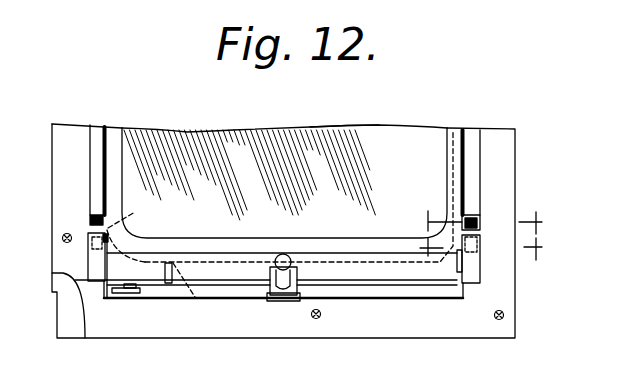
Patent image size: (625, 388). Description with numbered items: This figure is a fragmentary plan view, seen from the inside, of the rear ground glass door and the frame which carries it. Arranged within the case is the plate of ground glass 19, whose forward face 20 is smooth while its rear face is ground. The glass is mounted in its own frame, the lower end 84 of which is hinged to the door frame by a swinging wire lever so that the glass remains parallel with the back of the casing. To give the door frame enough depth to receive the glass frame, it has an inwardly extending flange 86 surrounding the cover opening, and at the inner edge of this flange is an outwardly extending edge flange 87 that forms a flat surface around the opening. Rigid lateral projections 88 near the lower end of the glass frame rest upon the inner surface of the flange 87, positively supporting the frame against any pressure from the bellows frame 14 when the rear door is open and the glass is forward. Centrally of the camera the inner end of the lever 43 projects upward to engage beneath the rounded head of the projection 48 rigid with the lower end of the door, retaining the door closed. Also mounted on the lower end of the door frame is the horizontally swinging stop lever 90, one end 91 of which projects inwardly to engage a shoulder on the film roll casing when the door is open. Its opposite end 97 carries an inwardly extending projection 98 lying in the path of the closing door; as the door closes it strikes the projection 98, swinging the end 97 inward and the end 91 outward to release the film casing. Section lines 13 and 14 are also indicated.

The plate of ground glass 19 is at (252, 128).
The forward face 20 is at (342, 131).
The inwardly extending flange 86 is at (460, 140).
The outwardly extending edge flange 87 is at (474, 155).
The rigid lateral projections 88 is at (104, 220).
The lower end of the frame 84 is at (96, 233).
The section line 13 is at (485, 222).
The bellows frame 14 is at (482, 249).
The projection 48 is at (285, 255).
The lever 43 is at (283, 288).
The horizontally swinging stop lever 90 is at (115, 299).
The end of the stop lever 91 is at (74, 283).
The opposite end of the stop lever 97 is at (167, 290).
The inwardly extending projection 98 is at (196, 297).